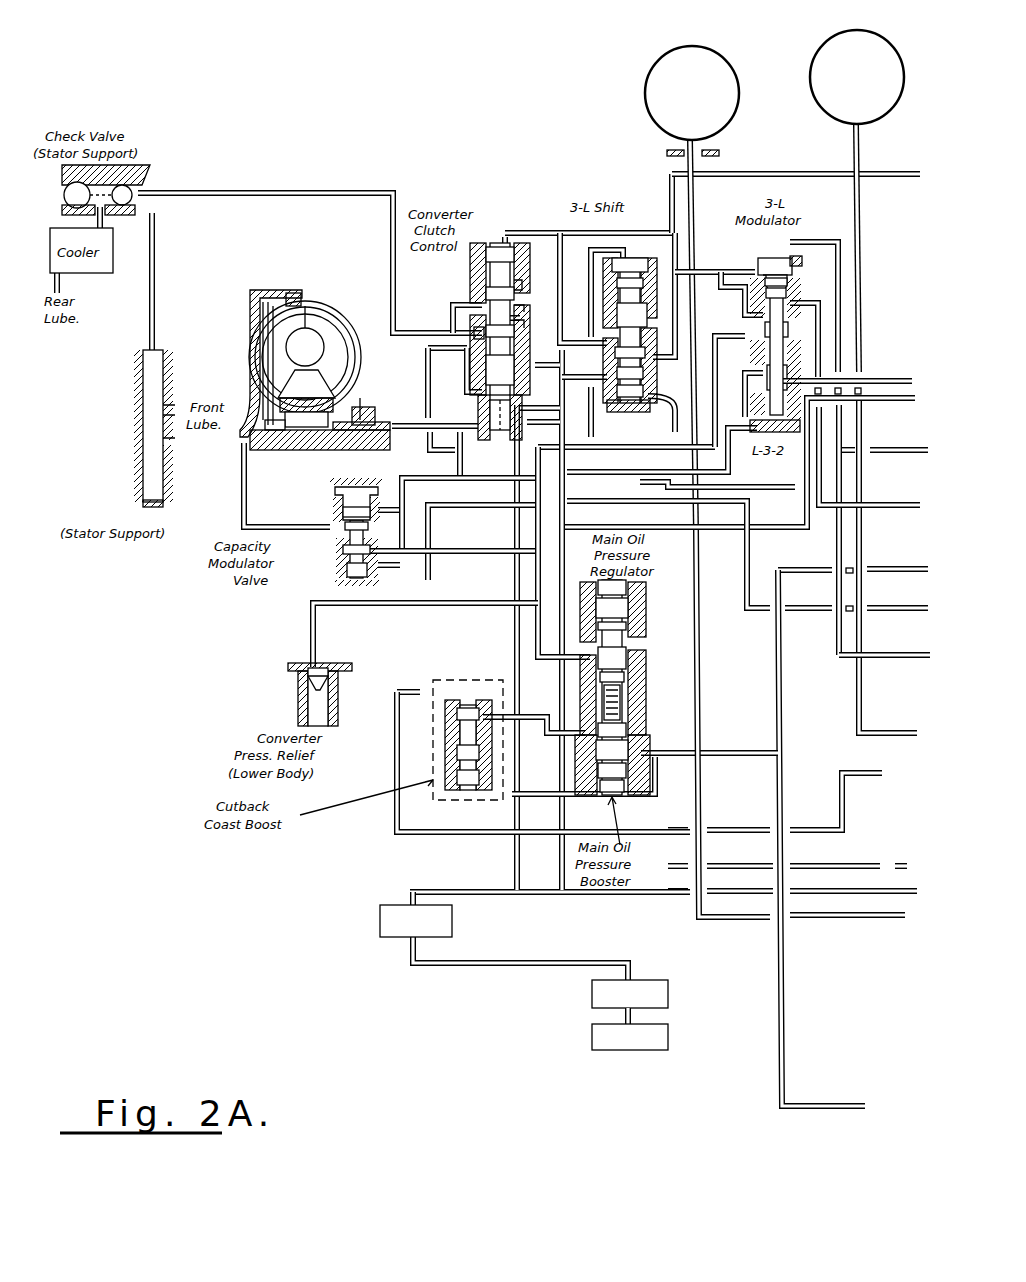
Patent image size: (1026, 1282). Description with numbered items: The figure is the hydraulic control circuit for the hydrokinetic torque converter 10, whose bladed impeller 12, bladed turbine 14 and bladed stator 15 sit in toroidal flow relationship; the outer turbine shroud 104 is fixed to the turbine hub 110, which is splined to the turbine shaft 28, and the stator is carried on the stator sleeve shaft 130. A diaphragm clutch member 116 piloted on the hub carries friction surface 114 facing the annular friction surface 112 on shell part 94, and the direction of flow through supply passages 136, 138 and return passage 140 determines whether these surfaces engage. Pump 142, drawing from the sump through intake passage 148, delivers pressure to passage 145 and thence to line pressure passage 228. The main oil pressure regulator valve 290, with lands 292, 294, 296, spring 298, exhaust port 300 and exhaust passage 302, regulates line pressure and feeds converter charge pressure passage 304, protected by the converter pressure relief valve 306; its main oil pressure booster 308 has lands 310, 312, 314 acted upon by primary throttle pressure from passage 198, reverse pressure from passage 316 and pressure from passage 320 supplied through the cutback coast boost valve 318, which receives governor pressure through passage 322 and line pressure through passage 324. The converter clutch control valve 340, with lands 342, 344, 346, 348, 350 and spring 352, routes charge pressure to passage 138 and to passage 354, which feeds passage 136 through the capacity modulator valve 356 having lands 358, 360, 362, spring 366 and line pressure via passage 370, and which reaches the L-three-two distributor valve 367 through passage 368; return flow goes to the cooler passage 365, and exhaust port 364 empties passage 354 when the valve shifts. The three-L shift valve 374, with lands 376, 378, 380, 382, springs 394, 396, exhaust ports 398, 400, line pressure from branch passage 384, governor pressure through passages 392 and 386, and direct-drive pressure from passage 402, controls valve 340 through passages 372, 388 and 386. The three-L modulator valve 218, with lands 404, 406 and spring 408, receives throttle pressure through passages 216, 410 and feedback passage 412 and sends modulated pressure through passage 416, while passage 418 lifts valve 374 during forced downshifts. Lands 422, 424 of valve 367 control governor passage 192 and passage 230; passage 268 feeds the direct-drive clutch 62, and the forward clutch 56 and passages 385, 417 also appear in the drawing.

The hydrokinetic torque converter 10 is at (331, 294).
The bladed impeller 12 is at (340, 320).
The bladed turbine 14 is at (294, 291).
The bladed stator 15 is at (336, 396).
The turbine shaft 28 is at (330, 489).
The forward clutch 56 is at (733, 62).
The direct-drive clutch 62 is at (882, 38).
The shell part 94 is at (250, 312).
The outer turbine shroud 104 is at (305, 336).
The turbine hub 110 is at (292, 450).
The annular friction surface 112 is at (256, 290).
The friction surface 114 is at (250, 325).
The clutch member 116 is at (250, 347).
The stator sleeve shaft 130 is at (360, 422).
The converter pressure supply passage 136 is at (240, 468).
The converter pressure supply passage 138 is at (420, 425).
The converter fluid flow return passage 140 is at (432, 418).
The pump 142 is at (378, 918).
The supply pressure passage 145 is at (702, 680).
The intake passage 148 is at (634, 968).
The governor pressure passage 192 is at (900, 386).
The primary throttle pressure passage 198 is at (820, 865).
The passage 216 is at (840, 245).
The three-L modulator valve 218 is at (768, 256).
The line pressure passage 228 is at (530, 627).
The passage 230 is at (871, 403).
The feed passage 268 is at (880, 362).
The main oil pressure regulator valve 290 is at (630, 672).
The valve land 292 is at (630, 655).
The valve land 294 is at (630, 634).
The valve land 296 is at (628, 590).
The valve spring 298 is at (630, 690).
The exhaust port 300 is at (630, 612).
The exhaust passage 302 is at (521, 882).
The converter charge pressure passage 304 is at (538, 600).
The converter pressure relief valve 306 is at (311, 657).
The main oil pressure booster 308 is at (598, 750).
The annular land 310 is at (630, 720).
The annular land 312 is at (630, 740).
The annular land 314 is at (585, 776).
The passage 316 is at (726, 750).
The cutback coast boost valve 318 is at (494, 806).
The passage 320 is at (538, 714).
The passage 322 is at (432, 570).
The passage 324 is at (808, 828).
The converter clutch control valve 340 is at (520, 252).
The valve land 342 is at (485, 272).
The valve land 344 is at (495, 295).
The valve land 346 is at (483, 330).
The valve land 348 is at (490, 363).
The valve land 350 is at (509, 440).
The valve spring 352 is at (492, 437).
The passage 354 is at (428, 350).
The capacity modulator valve 356 is at (370, 527).
The valve land 358 is at (343, 516).
The valve land 360 is at (343, 555).
The valve land 362 is at (347, 578).
The exhaust port 364 is at (516, 310).
The passage 365 is at (376, 190).
The spring 366 is at (340, 500).
The L-three-two distributor valve 367 is at (766, 350).
The passage 368 is at (620, 478).
The passage 370 is at (470, 551).
The passage 372 is at (562, 234).
The three-L shift valve 374 is at (636, 260).
The valve land 376 is at (648, 262).
The valve land 378 is at (616, 310).
The valve land 380 is at (645, 383).
The valve land 382 is at (645, 397).
The branch passage 384 is at (570, 375).
The passage 385 is at (514, 232).
The signal passage 386 is at (603, 248).
The communicating passage 388 is at (518, 326).
The passage 392 is at (645, 506).
The valve spring 394 is at (630, 410).
The valve spring 396 is at (516, 283).
The exhaust port 398 is at (673, 425).
The exhaust port 400 is at (650, 320).
The passage 402 is at (772, 172).
The valve land 404 is at (784, 258).
The valve land 406 is at (790, 272).
The valve spring 408 is at (790, 296).
The passage 410 is at (842, 538).
The passage 412 is at (872, 454).
The passage 416 is at (698, 265).
The passage 417 is at (740, 300).
The passage 418 is at (766, 486).
The valve land 422 is at (778, 345).
The valve land 424 is at (790, 395).